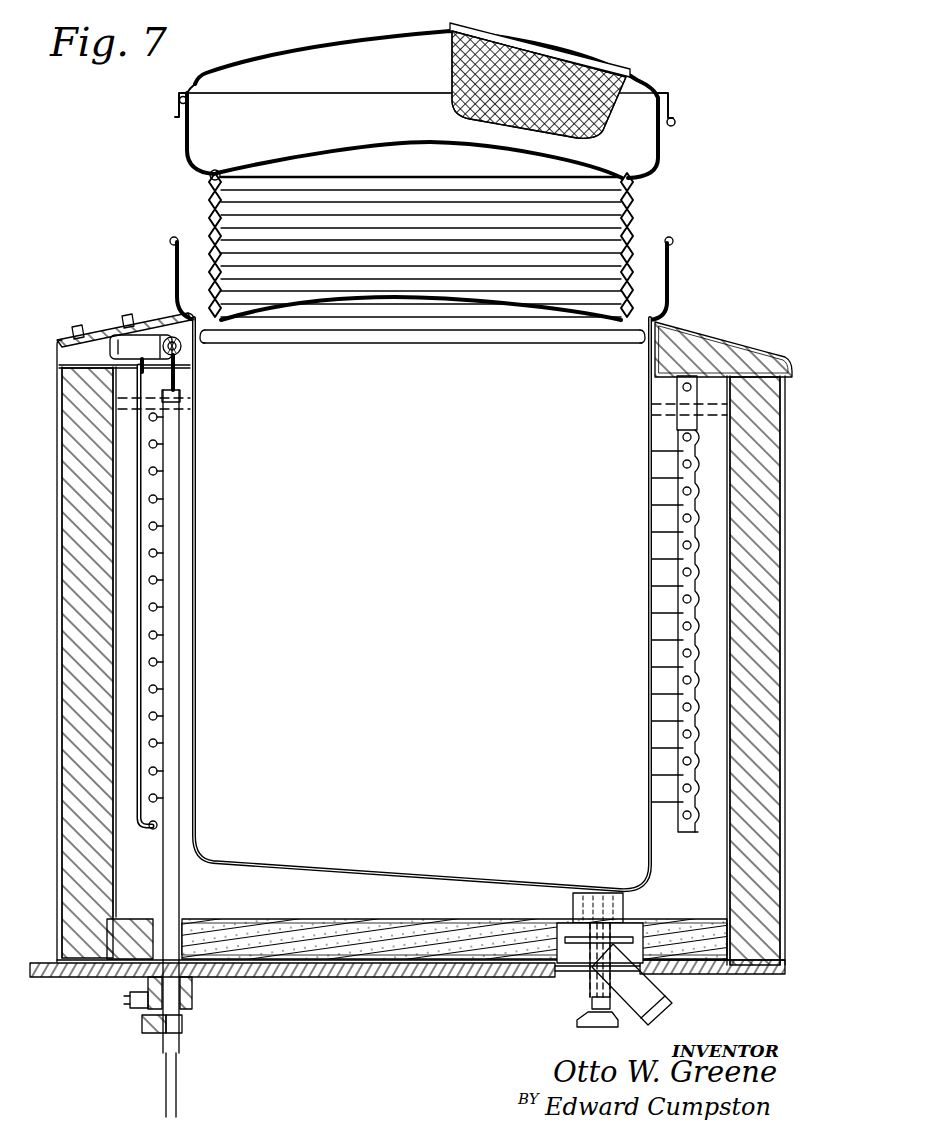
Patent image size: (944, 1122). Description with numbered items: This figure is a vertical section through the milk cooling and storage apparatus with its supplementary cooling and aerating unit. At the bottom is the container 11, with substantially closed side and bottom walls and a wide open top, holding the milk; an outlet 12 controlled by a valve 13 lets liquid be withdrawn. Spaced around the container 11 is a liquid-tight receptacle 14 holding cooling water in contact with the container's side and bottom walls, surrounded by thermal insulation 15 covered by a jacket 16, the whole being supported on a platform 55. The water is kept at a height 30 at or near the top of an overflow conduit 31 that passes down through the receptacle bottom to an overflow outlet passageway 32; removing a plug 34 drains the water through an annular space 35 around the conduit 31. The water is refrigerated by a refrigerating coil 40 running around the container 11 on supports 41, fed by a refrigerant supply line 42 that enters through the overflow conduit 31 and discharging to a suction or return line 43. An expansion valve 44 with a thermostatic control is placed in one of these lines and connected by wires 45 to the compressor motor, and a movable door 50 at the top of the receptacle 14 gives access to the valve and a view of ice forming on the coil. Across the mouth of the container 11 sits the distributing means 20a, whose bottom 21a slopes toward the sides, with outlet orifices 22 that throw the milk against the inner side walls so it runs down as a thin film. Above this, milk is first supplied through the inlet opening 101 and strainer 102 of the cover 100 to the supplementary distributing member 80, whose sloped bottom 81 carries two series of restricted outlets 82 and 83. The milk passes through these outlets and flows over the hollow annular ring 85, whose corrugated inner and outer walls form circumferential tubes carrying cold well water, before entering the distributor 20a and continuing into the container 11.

The container 11 is at (197, 683).
The outlet 12 is at (668, 1005).
The valve 13 is at (590, 1003).
The liquid-tight receptacle 14 is at (117, 888).
The thermal insulation 15 is at (735, 345).
The jacket 16 is at (62, 667).
The distributing means 20a is at (681, 272).
The bottom of distributor 21a is at (396, 299).
The outlet orifices 22 is at (222, 344).
The liquid height 30 is at (182, 392).
The overflow conduit 31 is at (181, 418).
The overflow outlet passageway 32 is at (140, 1025).
The plug 34 is at (124, 1000).
The annular space 35 is at (162, 908).
The refrigerating coil 40 is at (160, 480).
The supports 41 is at (690, 649).
The refrigerant supply line 42 is at (142, 598).
The suction or return line 43 is at (118, 360).
The expansion valve 44 is at (153, 333).
The wires 45 is at (124, 318).
The movable door 50 is at (70, 338).
The platform 55 is at (452, 975).
The supplementary distributing member 80 is at (192, 146).
The bottom of distributor 81 is at (393, 141).
The restricted outlets 82 is at (227, 171).
The restricted outlets 83 is at (215, 168).
The hollow annular ring 85 is at (209, 185).
The cover 100 is at (343, 41).
The inlet opening 101 is at (598, 46).
The strainer 102 is at (447, 67).